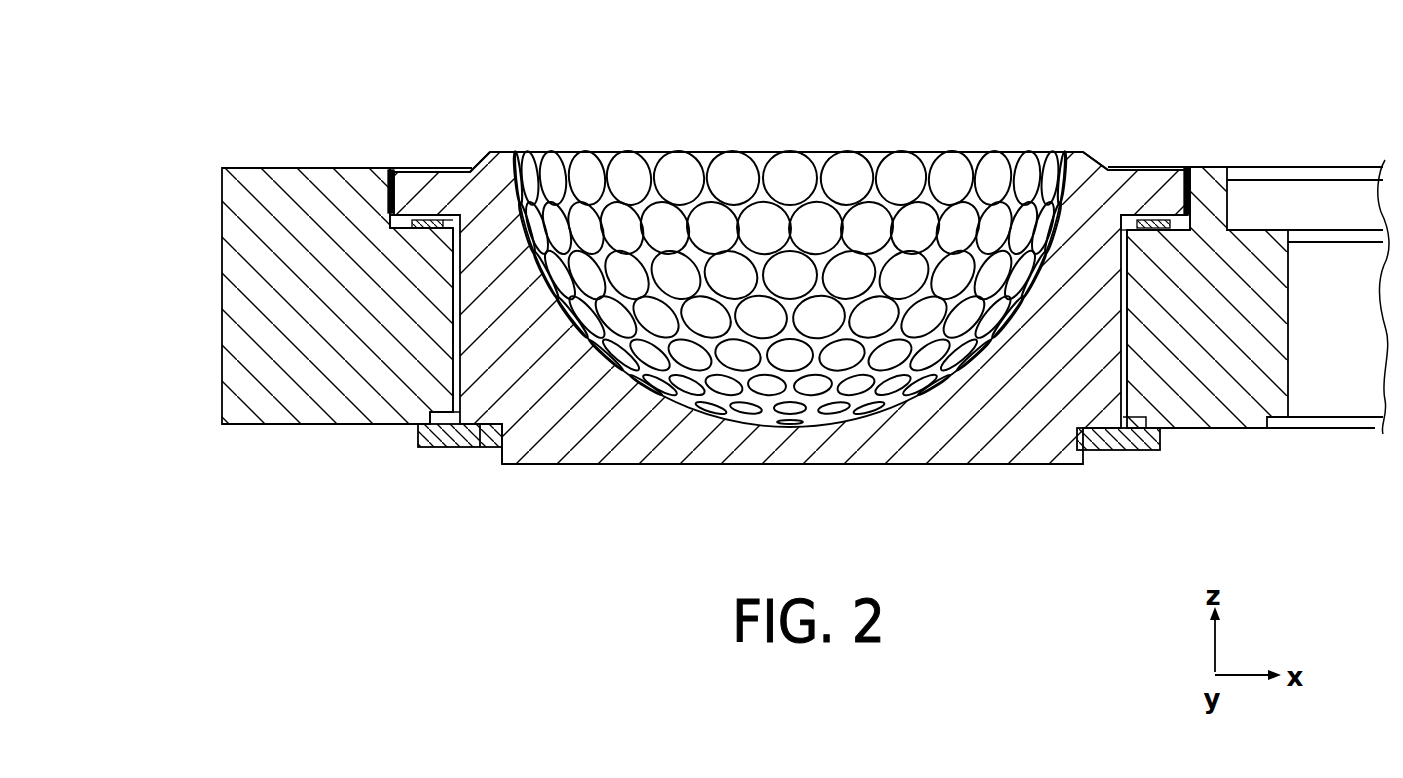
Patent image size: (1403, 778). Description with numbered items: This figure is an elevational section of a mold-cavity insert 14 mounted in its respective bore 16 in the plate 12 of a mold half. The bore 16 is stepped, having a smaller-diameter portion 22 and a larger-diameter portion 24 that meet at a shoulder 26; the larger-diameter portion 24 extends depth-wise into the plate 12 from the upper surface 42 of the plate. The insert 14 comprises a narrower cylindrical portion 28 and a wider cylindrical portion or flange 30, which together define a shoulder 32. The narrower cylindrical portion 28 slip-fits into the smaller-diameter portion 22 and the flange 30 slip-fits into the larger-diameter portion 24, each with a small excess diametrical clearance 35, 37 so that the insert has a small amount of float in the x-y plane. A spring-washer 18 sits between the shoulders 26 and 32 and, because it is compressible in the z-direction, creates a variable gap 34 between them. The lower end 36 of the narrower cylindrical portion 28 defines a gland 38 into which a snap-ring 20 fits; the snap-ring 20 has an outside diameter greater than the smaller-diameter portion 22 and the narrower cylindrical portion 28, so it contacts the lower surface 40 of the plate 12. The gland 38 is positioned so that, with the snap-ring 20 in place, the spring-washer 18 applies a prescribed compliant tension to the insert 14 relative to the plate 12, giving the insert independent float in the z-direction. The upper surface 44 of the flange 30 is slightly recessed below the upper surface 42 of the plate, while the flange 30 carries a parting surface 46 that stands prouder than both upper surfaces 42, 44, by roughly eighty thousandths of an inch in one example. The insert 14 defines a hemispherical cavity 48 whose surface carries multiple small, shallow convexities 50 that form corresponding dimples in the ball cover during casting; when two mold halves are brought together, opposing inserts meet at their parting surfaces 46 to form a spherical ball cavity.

The plate 12 is at (212, 395).
The mold-cavity insert 14 is at (722, 475).
The bore 16 is at (467, 382).
The spring-washer 18 is at (398, 232).
The snap-ring 20 is at (424, 448).
The smaller-diameter portion 22 is at (1123, 370).
The larger-diameter portion 24 is at (390, 222).
The shoulder 26 is at (396, 232).
The narrower cylindrical portion 28 is at (450, 340).
The flange 30 is at (390, 200).
The shoulder 32 is at (403, 208).
The variable gap 34 is at (432, 218).
The excess diametrical clearance 35 is at (453, 380).
The lower end 36 is at (480, 447).
The excess diametrical clearance 37 is at (391, 176).
The gland 38 is at (503, 438).
The lower surface 40 is at (321, 426).
The upper surface 42 is at (358, 168).
The upper surface 44 is at (1152, 167).
The parting surface 46 is at (492, 150).
The hemispherical cavity 48 is at (865, 215).
The convexities 50 is at (683, 168).